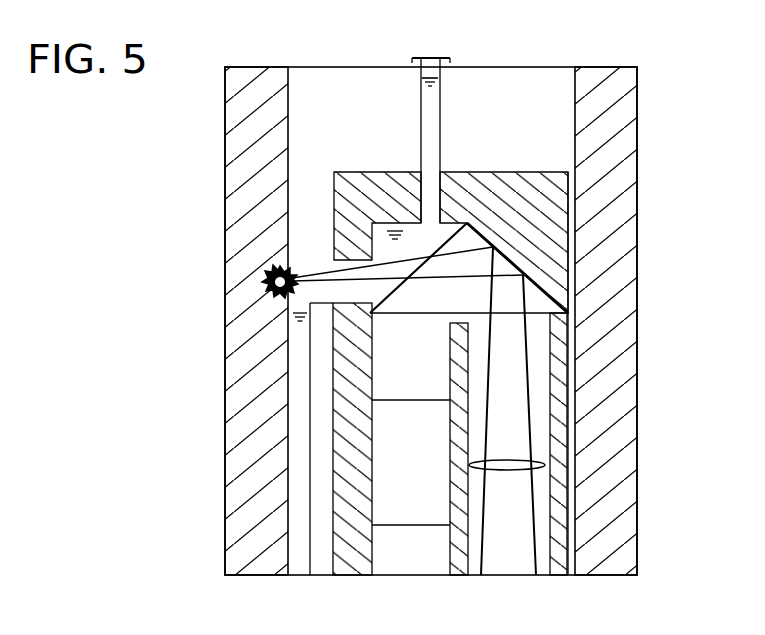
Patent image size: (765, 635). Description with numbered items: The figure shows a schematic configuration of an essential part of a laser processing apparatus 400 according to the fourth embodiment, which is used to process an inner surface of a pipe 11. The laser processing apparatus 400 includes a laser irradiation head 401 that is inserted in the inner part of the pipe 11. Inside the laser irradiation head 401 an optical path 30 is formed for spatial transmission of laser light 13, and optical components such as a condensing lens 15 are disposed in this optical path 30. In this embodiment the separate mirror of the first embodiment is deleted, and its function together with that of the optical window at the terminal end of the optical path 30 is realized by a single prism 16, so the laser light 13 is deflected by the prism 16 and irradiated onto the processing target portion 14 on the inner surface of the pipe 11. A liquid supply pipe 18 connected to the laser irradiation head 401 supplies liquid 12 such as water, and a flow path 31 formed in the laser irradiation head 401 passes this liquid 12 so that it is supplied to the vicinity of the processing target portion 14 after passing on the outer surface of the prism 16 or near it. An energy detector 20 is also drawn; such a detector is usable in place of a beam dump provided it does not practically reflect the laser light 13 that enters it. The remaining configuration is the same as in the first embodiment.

The laser processing apparatus 400 is at (503, 92).
The pipe 11 is at (626, 104).
The liquid 12 is at (298, 387).
The laser light 13 is at (509, 560).
The processing target portion 14 is at (268, 283).
The condensing lens 15 is at (545, 460).
The prism 16 is at (475, 245).
The liquid supply pipe 18 is at (421, 101).
The energy detector 20 is at (415, 508).
The optical path 30 is at (538, 357).
The flow path 31 is at (375, 222).
The laser irradiation head 401 is at (448, 180).